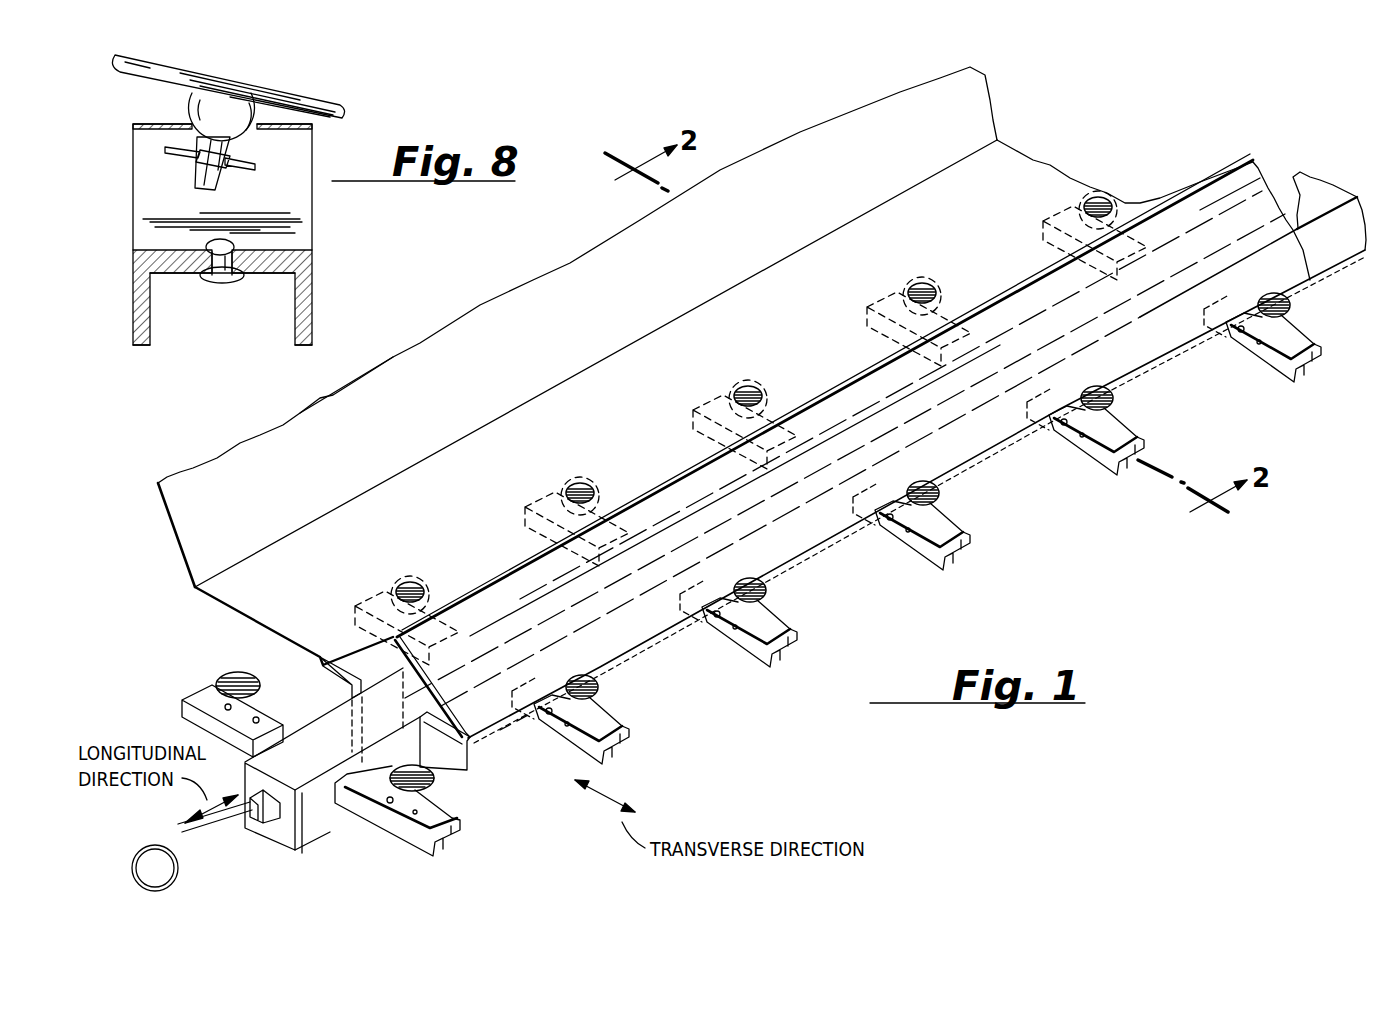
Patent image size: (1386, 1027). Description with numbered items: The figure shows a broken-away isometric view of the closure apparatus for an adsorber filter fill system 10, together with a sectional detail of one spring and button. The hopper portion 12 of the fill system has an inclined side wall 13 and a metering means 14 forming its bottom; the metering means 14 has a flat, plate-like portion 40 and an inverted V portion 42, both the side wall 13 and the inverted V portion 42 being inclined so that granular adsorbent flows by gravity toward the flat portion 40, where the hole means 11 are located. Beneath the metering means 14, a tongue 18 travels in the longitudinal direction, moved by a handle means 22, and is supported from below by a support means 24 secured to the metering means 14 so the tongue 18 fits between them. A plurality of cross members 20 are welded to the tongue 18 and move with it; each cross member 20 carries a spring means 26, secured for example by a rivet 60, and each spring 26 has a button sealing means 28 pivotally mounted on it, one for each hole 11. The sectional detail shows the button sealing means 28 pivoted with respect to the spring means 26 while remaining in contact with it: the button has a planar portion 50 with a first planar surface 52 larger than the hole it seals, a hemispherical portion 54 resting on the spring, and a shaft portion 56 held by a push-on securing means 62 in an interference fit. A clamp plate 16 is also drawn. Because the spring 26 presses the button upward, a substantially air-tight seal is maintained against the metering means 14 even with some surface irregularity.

In FIG. 1, the adsorber filter fill system 10 is at (1052, 100).
In FIG. 1, the hole means 11 is at (1116, 200).
In FIG. 1, the hopper portion 12 is at (1000, 172).
In FIG. 1, the side wall 13 is at (622, 270).
In FIG. 1, the metering means 14 is at (1113, 190).
In FIG. 1, the clamp plate 16 is at (232, 714).
In FIG. 1, the tongue 18 is at (328, 822).
In FIG. 8, the cross members 20 is at (305, 290).
In FIG. 1, the cross members 20 is at (958, 556).
In FIG. 1, the handle means 22 is at (180, 876).
In FIG. 1, the support means 24 is at (455, 760).
In FIG. 8, the spring means 26 is at (314, 205).
In FIG. 1, the spring means 26 is at (945, 524).
In FIG. 1, the button sealing means 28 is at (912, 525).
In FIG. 1, the flat plate-like portion 40 is at (1083, 180).
In FIG. 1, the inverted V portion 42 is at (1250, 180).
In FIG. 8, the planar portion 50 is at (330, 105).
In FIG. 8, the first planar surface 52 is at (243, 83).
In FIG. 8, the hemispherical portion 54 is at (186, 102).
In FIG. 8, the shaft portion 56 is at (190, 183).
In FIG. 8, the rivet 60 is at (222, 278).
In FIG. 8, the means for securing the button sealing means 62 is at (246, 165).